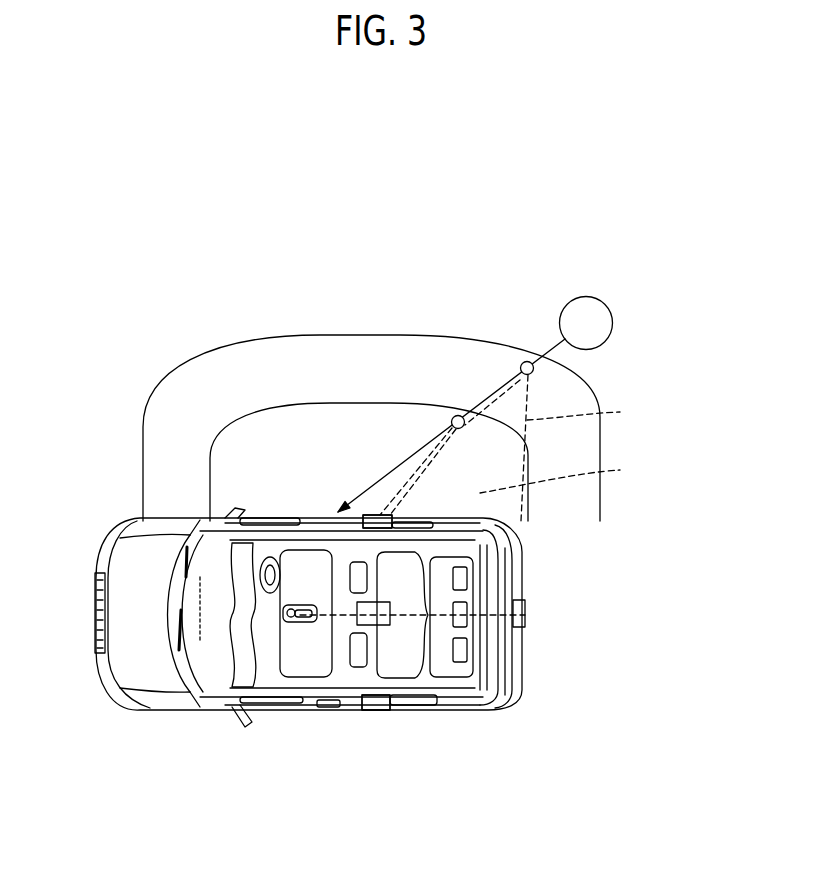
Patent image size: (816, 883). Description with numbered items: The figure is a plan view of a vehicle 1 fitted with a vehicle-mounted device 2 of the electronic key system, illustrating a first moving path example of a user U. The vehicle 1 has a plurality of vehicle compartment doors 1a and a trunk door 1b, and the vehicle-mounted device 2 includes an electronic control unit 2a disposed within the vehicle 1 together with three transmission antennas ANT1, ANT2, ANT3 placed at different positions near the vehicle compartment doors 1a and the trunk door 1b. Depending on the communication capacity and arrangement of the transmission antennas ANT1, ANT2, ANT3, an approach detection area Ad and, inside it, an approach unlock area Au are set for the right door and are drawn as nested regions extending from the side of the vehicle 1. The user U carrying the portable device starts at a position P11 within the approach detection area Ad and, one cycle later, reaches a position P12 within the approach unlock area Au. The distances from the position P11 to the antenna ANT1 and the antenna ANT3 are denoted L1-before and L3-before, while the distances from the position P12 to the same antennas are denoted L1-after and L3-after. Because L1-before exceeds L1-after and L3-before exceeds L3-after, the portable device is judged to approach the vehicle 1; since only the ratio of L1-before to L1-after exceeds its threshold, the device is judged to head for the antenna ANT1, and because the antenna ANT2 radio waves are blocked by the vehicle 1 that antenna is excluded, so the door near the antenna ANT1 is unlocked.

The vehicle 1 is at (123, 723).
The vehicle compartment doors 1a is at (277, 517).
The trunk door 1b is at (520, 665).
The vehicle-mounted device 2 is at (403, 717).
The electronic control unit 2a is at (352, 627).
The transmission antenna ANT1 is at (360, 530).
The transmission antenna ANT2 is at (372, 710).
The transmission antenna ANT3 is at (527, 615).
The approach unlock area Au is at (302, 405).
The approach detection area Ad is at (345, 335).
The user U is at (612, 323).
The position P11 is at (525, 361).
The position P12 is at (457, 415).
The distance between position P11 and antenna ANT1 L1-before is at (498, 392).
The distance between position P12 and antenna ANT1 L1-after is at (432, 517).
The distance between position P11 and antenna ANT3 L3-before is at (631, 416).
The distance between position P12 and antenna ANT3 L3-after is at (600, 476).